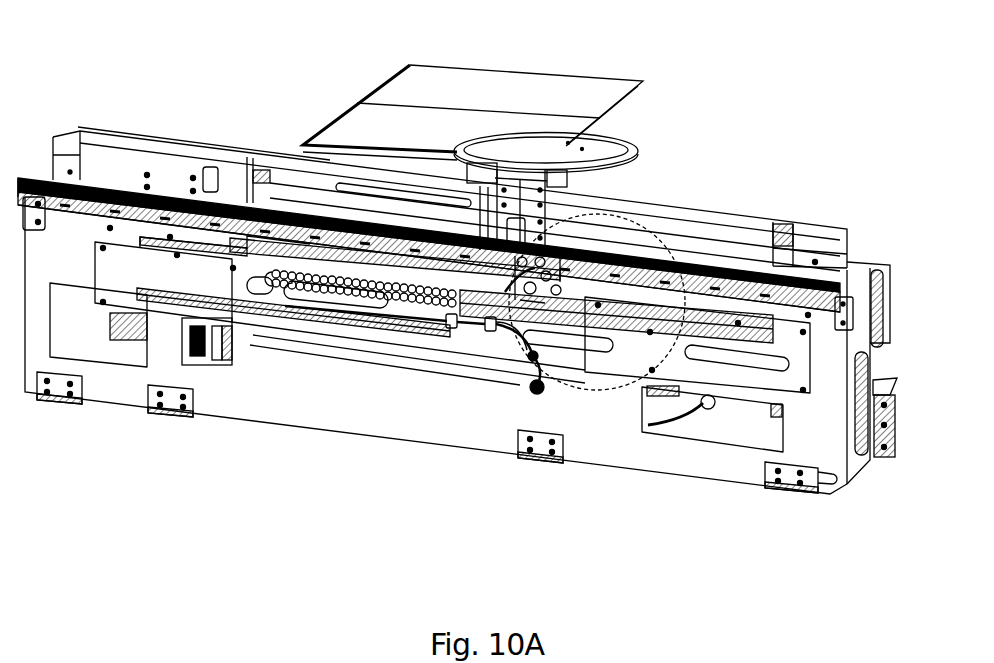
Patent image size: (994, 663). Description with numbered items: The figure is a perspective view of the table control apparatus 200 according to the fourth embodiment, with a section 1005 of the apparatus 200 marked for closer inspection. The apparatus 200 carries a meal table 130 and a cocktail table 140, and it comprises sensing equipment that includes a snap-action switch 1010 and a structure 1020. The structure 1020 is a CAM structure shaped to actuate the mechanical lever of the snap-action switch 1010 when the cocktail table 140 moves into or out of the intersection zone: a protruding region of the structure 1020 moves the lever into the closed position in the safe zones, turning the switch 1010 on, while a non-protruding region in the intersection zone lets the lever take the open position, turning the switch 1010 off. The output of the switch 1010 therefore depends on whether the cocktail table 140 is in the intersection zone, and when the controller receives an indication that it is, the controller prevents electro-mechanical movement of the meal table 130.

The table control apparatus 200 is at (206, 107).
The meal table 130 is at (582, 106).
The cocktail table 140 is at (565, 155).
The section 1005 is at (663, 260).
The snap-action switch 1010 is at (540, 245).
The structure 1020 is at (192, 248).